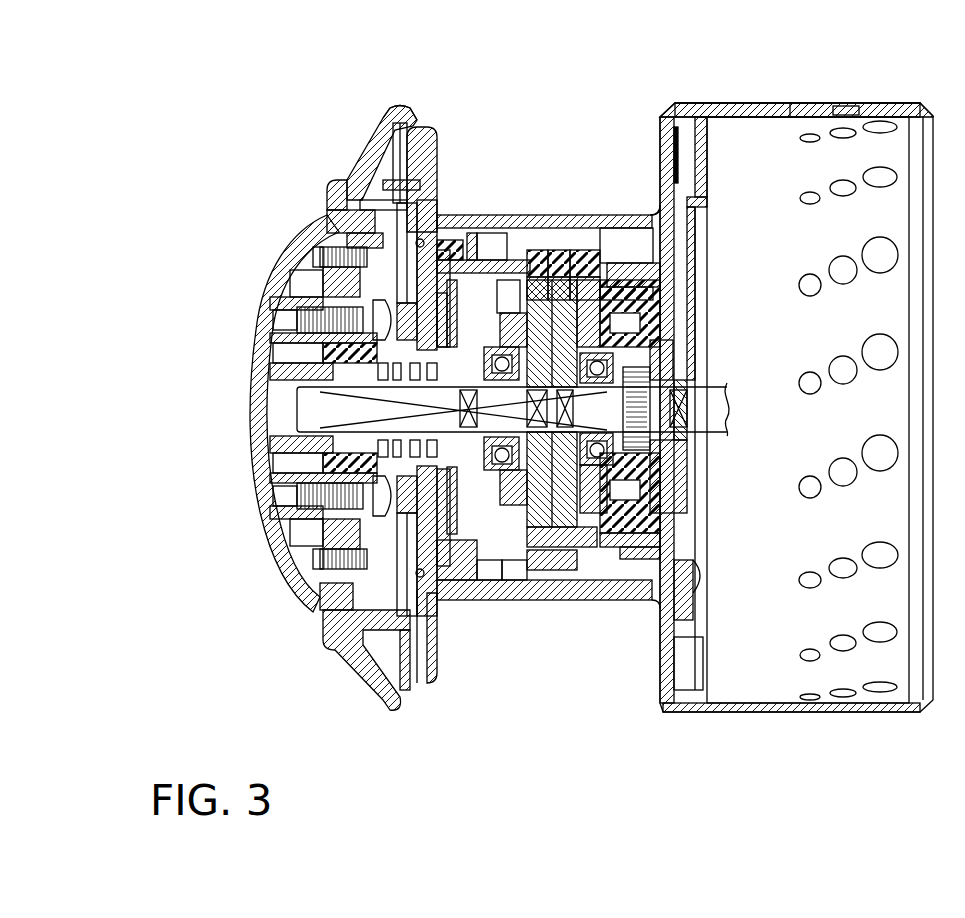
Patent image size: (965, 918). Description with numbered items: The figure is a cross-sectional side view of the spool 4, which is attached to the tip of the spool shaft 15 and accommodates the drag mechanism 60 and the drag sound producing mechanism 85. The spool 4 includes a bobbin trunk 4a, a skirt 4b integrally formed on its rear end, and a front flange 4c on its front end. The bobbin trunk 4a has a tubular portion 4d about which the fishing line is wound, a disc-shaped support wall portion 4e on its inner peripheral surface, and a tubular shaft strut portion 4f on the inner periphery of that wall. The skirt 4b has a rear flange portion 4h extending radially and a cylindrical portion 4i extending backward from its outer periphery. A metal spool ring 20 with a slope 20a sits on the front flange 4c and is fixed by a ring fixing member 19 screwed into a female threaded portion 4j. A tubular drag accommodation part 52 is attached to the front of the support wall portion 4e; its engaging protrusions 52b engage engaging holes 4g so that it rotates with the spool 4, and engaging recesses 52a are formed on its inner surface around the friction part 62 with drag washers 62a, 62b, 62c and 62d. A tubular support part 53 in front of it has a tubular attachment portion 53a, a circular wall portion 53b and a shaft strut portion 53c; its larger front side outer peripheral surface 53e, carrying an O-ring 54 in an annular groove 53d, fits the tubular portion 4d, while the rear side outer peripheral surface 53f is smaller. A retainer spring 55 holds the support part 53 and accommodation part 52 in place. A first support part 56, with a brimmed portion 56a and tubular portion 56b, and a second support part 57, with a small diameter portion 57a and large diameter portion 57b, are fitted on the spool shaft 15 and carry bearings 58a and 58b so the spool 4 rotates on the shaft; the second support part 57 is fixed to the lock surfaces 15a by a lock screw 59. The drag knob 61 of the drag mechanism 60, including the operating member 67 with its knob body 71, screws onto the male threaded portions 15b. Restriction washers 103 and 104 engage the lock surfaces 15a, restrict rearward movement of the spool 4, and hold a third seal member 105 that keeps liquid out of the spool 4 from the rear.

The spool 4 is at (590, 75).
The bobbin trunk 4a is at (500, 205).
The skirt 4b is at (842, 85).
The front flange 4c is at (436, 160).
The tubular portion 4d is at (680, 193).
The support wall portion 4e is at (700, 240).
The shaft strut portion 4f is at (695, 277).
The engaging holes 4g is at (700, 213).
The rear flange portion 4h is at (660, 122).
The cylindrical portion 4i is at (792, 105).
The female threaded portion 4j is at (385, 118).
The spool shaft 15 is at (718, 372).
The lock surfaces 15a is at (313, 407).
The male threaded portions 15b is at (327, 377).
The ring fixing member 19 is at (372, 152).
The spool ring 20 is at (406, 100).
The slope 20a is at (410, 120).
The tubular drag accommodation part 52 is at (593, 240).
The engaging recesses 52a is at (553, 570).
The engaging protrusions 52b is at (635, 215).
The tubular support part 53 is at (467, 243).
The tubular attachment portion 53a is at (487, 245).
The circular wall portion 53b is at (305, 300).
The shaft strut portion 53c is at (300, 312).
The annular groove 53d is at (327, 220).
The front side outer peripheral surface 53e is at (420, 700).
The rear side outer peripheral surface 53f is at (513, 253).
The O-ring 54 is at (453, 240).
The retainer spring 55 is at (345, 205).
The first support part 56 is at (453, 600).
The brimmed portion 56a is at (383, 440).
The tubular portion 56b is at (303, 510).
The second support part 57 is at (627, 560).
The small diameter portion 57a is at (603, 525).
The large diameter portion 57b is at (687, 343).
The bearing 58a is at (327, 350).
The bearing 58b is at (700, 437).
The lock screw 59 is at (620, 560).
The drag mechanism 60 is at (518, 648).
The drag knob 61 is at (483, 600).
The friction part 62 is at (512, 600).
The drag washer 62a is at (540, 235).
The drag washer 62b is at (557, 253).
The drag washer 62c is at (563, 240).
The drag washer 62d is at (577, 262).
The operating member 67 is at (252, 255).
The knob body 71 is at (260, 585).
The drag sound producing mechanism 85 is at (630, 560).
The restriction washer 103 is at (703, 548).
The restriction washer 104 is at (690, 453).
The third seal member 105 is at (690, 487).